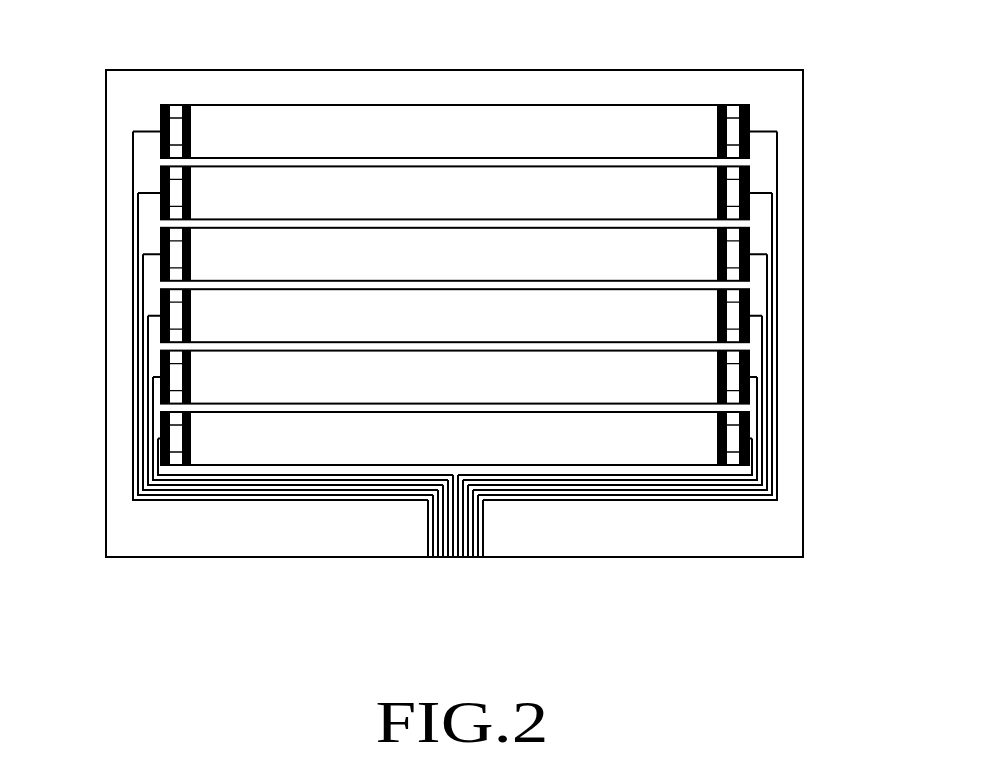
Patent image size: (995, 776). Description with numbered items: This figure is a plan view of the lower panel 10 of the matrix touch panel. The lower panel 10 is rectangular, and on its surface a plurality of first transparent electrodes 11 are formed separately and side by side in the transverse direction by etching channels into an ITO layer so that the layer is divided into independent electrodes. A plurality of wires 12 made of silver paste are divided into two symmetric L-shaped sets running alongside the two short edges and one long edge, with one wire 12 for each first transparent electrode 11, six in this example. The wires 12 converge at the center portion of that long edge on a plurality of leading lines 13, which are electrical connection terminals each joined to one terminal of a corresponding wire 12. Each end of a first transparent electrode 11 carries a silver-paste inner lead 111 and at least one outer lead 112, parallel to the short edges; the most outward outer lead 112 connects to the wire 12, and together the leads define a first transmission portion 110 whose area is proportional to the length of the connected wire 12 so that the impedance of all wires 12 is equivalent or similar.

The lower panel 10 is at (650, 80).
The first transparent electrode 11 is at (522, 125).
The first transmission portion 110 is at (177, 110).
The inner lead 111 is at (192, 112).
The outer lead 112 is at (160, 113).
The wire 12 is at (135, 355).
The leading line 13 is at (488, 535).